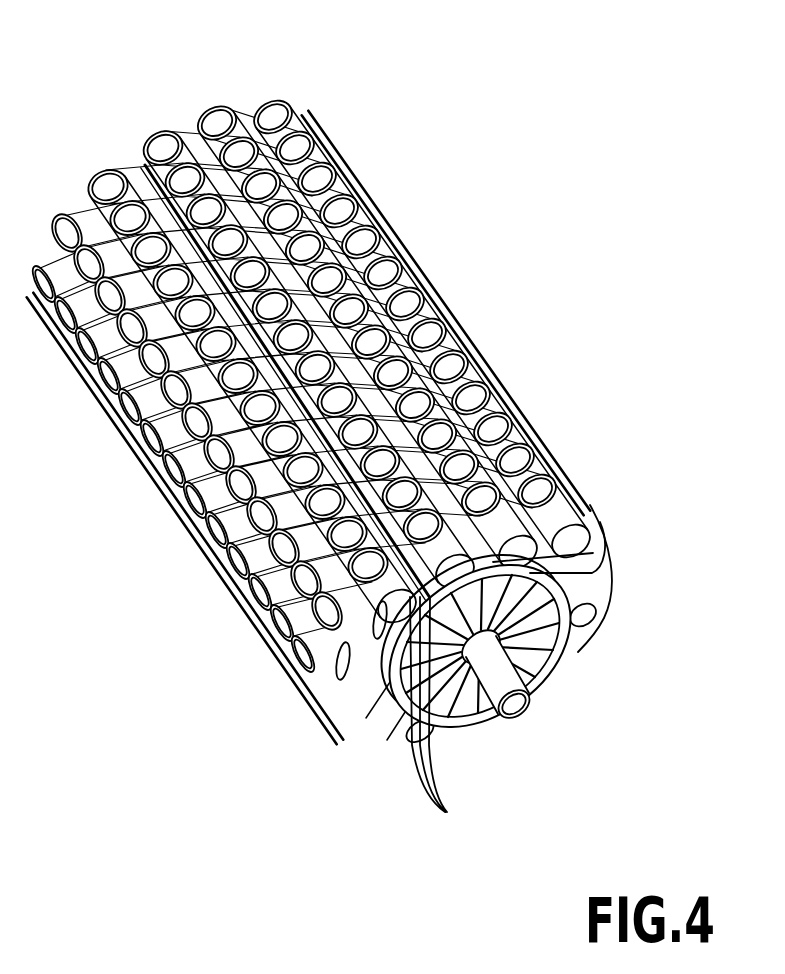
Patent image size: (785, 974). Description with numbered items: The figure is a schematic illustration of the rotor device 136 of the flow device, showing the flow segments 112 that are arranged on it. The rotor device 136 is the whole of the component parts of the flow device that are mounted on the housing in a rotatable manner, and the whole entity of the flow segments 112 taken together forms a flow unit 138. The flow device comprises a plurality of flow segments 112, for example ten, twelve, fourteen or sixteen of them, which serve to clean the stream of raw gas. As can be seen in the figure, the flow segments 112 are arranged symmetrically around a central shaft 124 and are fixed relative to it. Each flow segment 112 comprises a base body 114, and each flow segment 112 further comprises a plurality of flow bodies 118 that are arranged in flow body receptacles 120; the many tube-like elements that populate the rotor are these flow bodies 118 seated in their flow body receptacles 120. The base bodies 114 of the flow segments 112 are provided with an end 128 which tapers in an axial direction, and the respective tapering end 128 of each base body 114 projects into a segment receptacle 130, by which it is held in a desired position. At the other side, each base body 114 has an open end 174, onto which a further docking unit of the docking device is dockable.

The flow segment 112 is at (202, 98).
The flow body 118 is at (303, 112).
The flow body receptacle 120 is at (373, 203).
The rotor device 136 is at (543, 322).
The flow unit 138 is at (585, 397).
The open end 174 is at (560, 642).
The central shaft 124 is at (515, 696).
The tapering end 128 is at (527, 573).
The segment receptacle 130 is at (587, 537).
The base body 114 is at (439, 723).